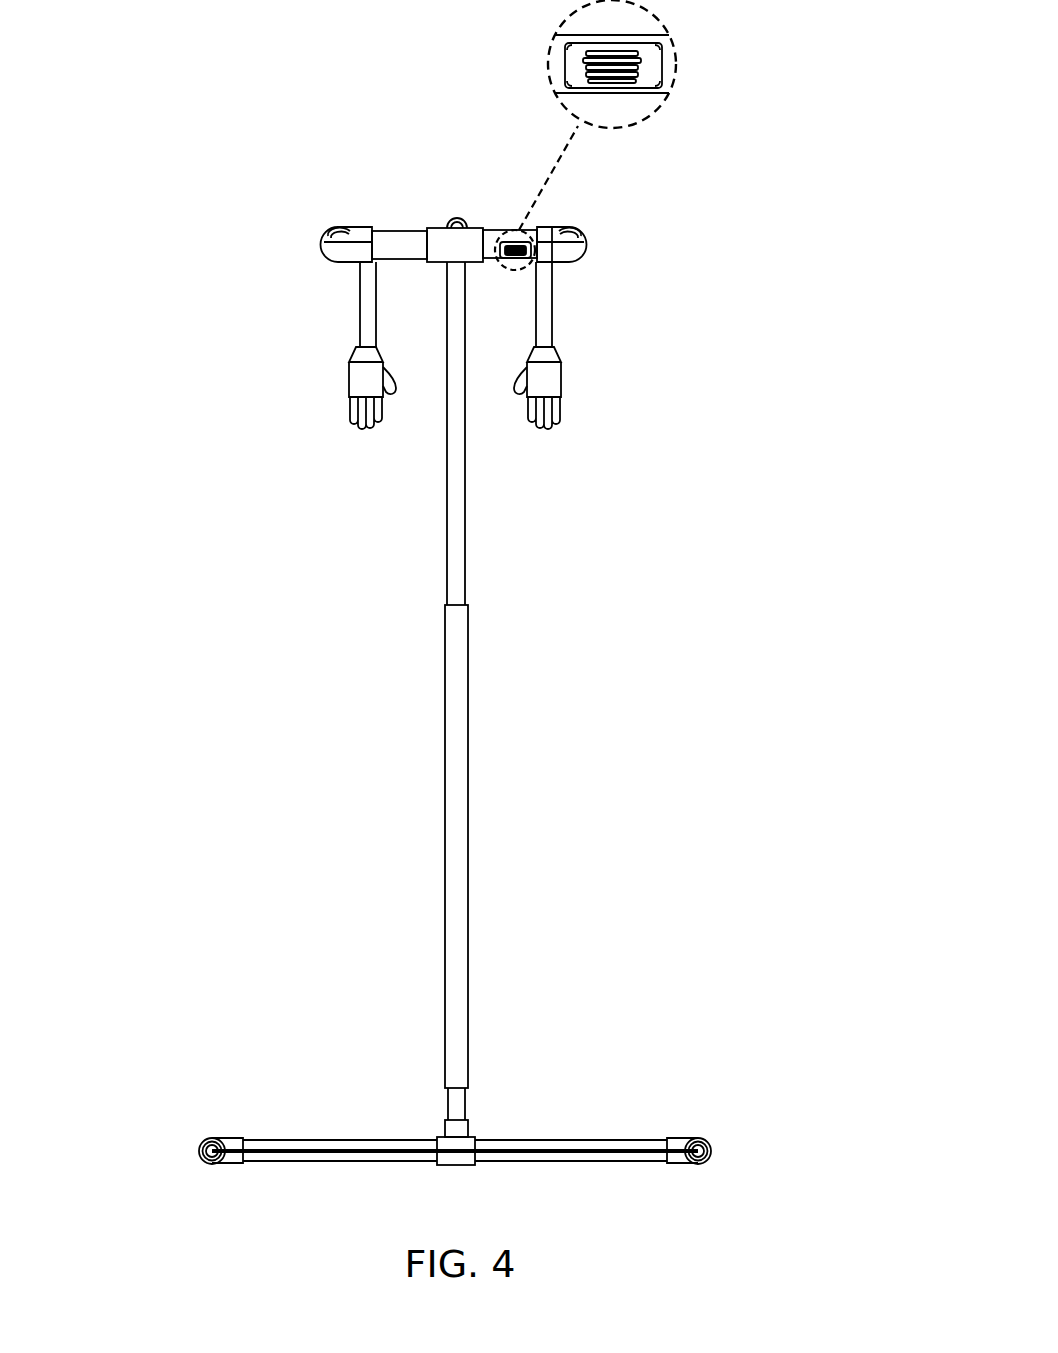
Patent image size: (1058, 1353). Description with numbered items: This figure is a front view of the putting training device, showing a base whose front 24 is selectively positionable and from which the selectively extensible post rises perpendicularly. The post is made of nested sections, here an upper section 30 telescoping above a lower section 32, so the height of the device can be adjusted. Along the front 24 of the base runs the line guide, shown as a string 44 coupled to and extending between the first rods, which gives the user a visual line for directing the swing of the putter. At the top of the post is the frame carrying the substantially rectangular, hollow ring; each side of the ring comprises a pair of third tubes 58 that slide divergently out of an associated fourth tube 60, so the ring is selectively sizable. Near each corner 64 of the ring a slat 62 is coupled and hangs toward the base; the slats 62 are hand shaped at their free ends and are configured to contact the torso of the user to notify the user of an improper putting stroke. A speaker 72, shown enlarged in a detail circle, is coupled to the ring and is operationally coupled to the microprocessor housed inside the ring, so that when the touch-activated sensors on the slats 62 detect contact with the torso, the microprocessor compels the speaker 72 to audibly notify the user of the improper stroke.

The front 24 is at (336, 1152).
The upper section 30 is at (458, 513).
The lower section 32 is at (458, 812).
The string 44 is at (560, 1153).
The third tubes 58 is at (393, 251).
The fourth tube 60 is at (437, 264).
The slats 62 is at (542, 317).
The corner 64 is at (573, 250).
The speaker 72 is at (632, 80).